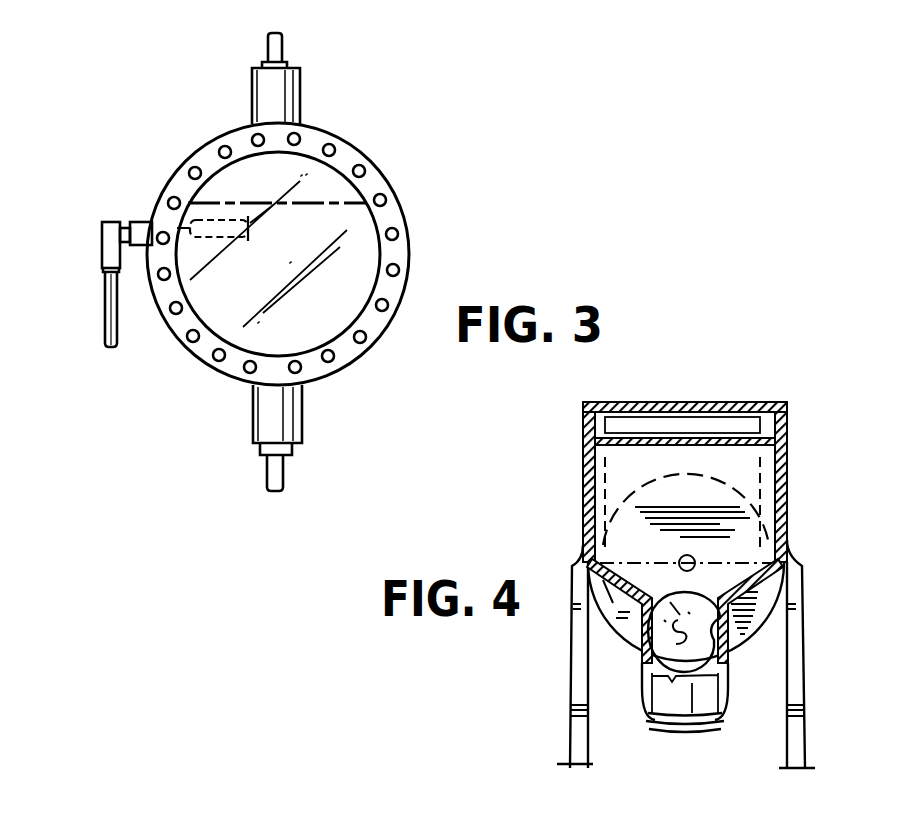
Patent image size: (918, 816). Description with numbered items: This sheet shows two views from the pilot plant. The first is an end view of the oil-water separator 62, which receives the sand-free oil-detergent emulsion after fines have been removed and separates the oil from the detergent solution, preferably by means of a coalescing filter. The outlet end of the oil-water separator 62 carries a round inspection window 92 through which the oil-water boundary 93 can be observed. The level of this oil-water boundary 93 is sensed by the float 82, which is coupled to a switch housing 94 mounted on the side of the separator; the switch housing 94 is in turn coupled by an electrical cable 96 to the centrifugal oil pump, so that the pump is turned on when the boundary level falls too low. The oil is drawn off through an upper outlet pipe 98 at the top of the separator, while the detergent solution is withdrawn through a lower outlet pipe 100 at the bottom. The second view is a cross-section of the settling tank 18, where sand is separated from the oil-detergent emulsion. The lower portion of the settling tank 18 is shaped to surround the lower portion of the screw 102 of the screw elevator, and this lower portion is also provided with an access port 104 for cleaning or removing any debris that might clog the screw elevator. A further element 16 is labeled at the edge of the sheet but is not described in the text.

In FIG. 3, the sight glass assembly 62 is at (343, 120).
In FIG. 3, the upper pipe connection 98 is at (270, 92).
In FIG. 3, the lower pipe connection 100 is at (268, 410).
In FIG. 3, the valve 94 is at (108, 240).
In FIG. 3, the valve handle rod 96 is at (108, 308).
In FIG. 3, the float 82 is at (232, 222).
In FIG. 3, the liquid level line 93 is at (327, 203).
In FIG. 3, the sight glass window 92 is at (350, 257).
In FIG. 4, the inner vessel 18 is at (737, 478).
In FIG. 4, the agitator lump 102 is at (693, 650).
In FIG. 4, the drain line 104 is at (690, 737).
In FIG. 4, the tank 16 is at (260, 815).